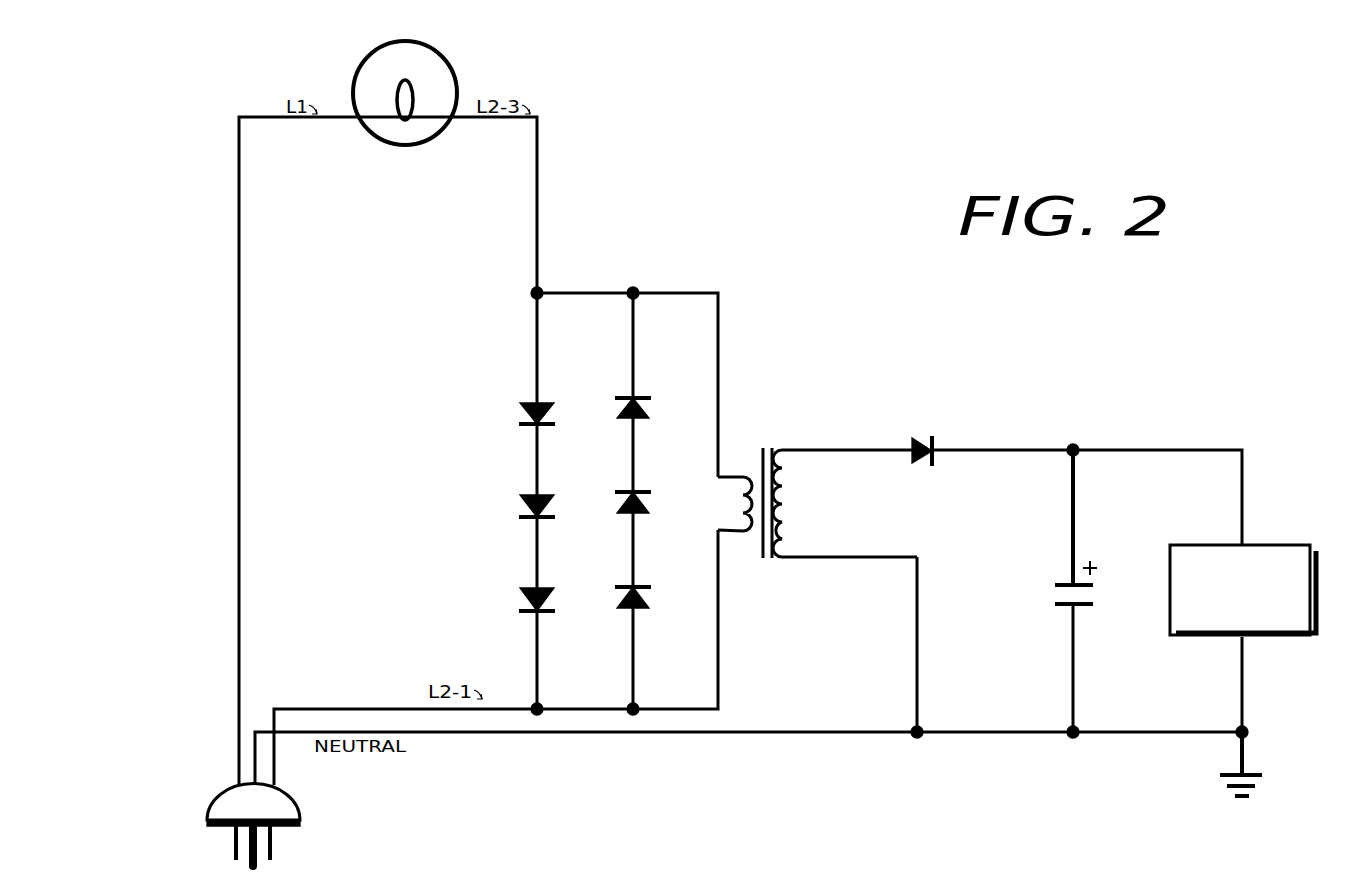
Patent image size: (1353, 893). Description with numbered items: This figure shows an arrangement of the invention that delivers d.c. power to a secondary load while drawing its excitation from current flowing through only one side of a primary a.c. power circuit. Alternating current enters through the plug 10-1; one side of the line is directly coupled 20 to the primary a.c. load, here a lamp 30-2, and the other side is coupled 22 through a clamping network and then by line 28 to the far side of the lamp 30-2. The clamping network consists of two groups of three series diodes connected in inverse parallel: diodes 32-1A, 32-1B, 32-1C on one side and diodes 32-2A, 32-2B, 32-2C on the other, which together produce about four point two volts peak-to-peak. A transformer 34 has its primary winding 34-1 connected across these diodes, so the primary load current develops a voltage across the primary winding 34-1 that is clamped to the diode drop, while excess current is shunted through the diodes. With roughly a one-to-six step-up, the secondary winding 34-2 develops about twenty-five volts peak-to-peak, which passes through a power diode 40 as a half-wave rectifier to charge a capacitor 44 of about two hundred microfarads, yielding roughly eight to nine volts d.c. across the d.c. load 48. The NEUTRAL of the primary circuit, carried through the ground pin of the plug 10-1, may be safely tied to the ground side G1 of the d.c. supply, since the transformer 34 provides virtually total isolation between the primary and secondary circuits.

The plug 10-1 is at (208, 802).
The direct coupling 20 is at (236, 393).
The series coupling line 22 is at (514, 713).
The line 28 is at (540, 215).
The lamp 30-2 is at (471, 95).
The diode 32-1A is at (512, 396).
The diode 32-1B is at (512, 490).
The diode 32-1C is at (512, 588).
The diode 32-2A is at (662, 394).
The diode 32-2B is at (661, 489).
The diode 32-2C is at (668, 578).
The transformer 34 is at (773, 566).
The primary winding 34-1 is at (728, 470).
The secondary winding 34-2 is at (803, 495).
The power diode 40 is at (946, 438).
The capacitor 44 is at (1052, 585).
The d.c. load 48 is at (1298, 543).
The ground side G1 is at (1246, 756).